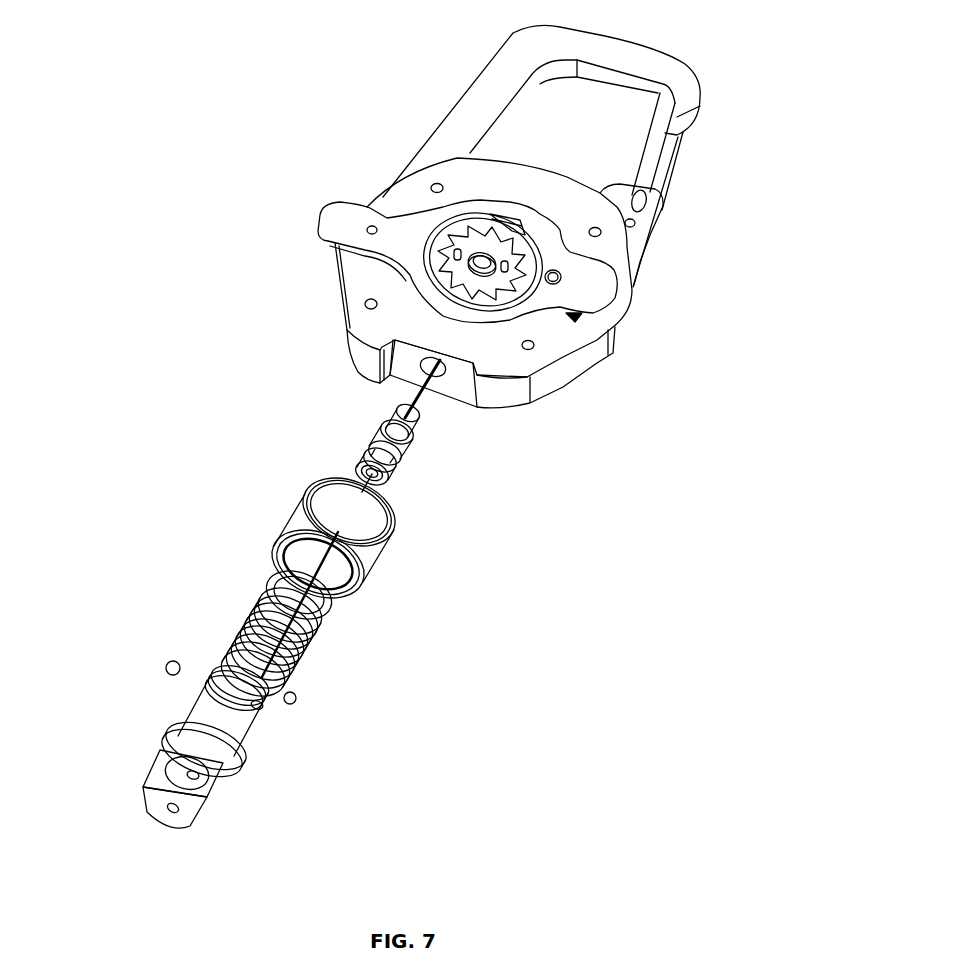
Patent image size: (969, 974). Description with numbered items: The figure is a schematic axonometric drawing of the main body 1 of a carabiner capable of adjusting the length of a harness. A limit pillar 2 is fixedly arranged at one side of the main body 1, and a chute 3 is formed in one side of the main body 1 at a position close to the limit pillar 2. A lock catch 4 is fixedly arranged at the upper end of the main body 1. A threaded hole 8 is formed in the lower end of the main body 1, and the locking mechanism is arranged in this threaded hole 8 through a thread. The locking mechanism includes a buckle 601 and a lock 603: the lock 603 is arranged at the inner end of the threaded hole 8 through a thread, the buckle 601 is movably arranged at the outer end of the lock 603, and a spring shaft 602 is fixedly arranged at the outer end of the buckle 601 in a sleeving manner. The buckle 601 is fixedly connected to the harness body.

The main body 1 is at (347, 278).
The limit pillar 2 is at (563, 277).
The chute 3 is at (573, 317).
The lock catch 4 is at (687, 87).
The threaded hole 8 is at (443, 380).
The buckle 601 is at (208, 715).
The spring shaft 602 is at (313, 518).
The lock 603 is at (377, 433).